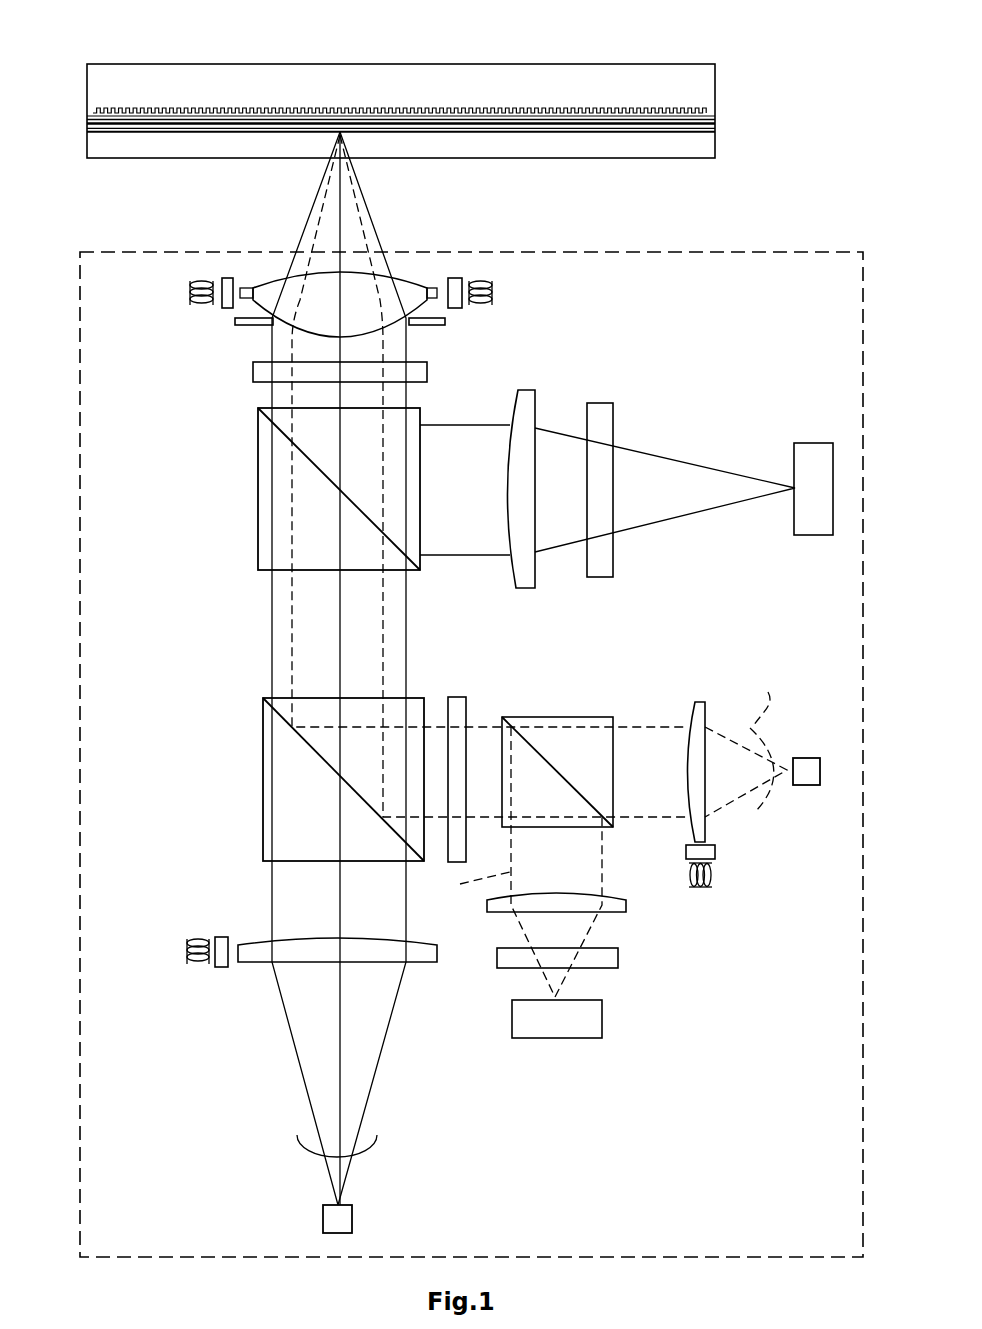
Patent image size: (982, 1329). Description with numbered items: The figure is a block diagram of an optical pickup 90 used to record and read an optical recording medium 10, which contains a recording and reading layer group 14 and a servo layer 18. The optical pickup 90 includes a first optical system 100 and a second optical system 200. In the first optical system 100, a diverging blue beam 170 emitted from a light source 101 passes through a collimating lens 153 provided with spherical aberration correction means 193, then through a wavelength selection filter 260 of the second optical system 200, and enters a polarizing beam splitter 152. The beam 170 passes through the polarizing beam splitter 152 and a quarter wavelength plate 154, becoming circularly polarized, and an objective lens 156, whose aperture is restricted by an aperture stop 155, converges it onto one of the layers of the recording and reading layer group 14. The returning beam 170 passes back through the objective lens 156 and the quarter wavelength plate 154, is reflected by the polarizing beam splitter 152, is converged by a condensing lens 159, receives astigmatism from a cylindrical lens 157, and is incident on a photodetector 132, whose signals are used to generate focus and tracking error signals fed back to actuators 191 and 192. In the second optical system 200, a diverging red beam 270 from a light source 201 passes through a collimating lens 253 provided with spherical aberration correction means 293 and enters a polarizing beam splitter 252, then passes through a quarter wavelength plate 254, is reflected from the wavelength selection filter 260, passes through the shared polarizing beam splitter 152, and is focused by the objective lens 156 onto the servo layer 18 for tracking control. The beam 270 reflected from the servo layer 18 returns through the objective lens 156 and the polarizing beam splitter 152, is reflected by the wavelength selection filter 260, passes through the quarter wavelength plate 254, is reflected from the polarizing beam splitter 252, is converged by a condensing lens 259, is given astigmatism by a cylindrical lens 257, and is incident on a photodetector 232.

The optical recording medium 10 is at (500, 41).
The servo layer 18 is at (512, 108).
The recording and reading layer group 14 is at (455, 132).
The optical pickup 90 is at (720, 251).
The first optical system 100 is at (732, 386).
The light source 101 is at (343, 1222).
The photodetector 132 is at (808, 465).
The polarizing beam splitter 152 is at (258, 490).
The collimating lens 153 is at (415, 965).
The ¼ wavelength plate 154 is at (253, 375).
The aperture stop 155 is at (235, 322).
The objective lens 156 is at (410, 276).
The cylindrical lens 157 is at (602, 418).
The condensing lens 159 is at (520, 392).
The beam 170 is at (650, 453).
The actuator 191 is at (188, 291).
The actuator 192 is at (500, 296).
The spherical aberration correction means 193 is at (185, 952).
The second optical system 200 is at (753, 950).
The light source 201 is at (803, 757).
The photodetector 232 is at (602, 1018).
The polarizing beam splitter 252 is at (553, 715).
The collimating lens 253 is at (692, 700).
The ¼ wavelength plate 254 is at (453, 695).
The cylindrical lens 257 is at (618, 958).
The condensing lens 259 is at (626, 905).
The wavelength selection filter 260 is at (263, 782).
The beam 270 is at (539, 566).
The spherical aberration correction means 293 is at (718, 868).